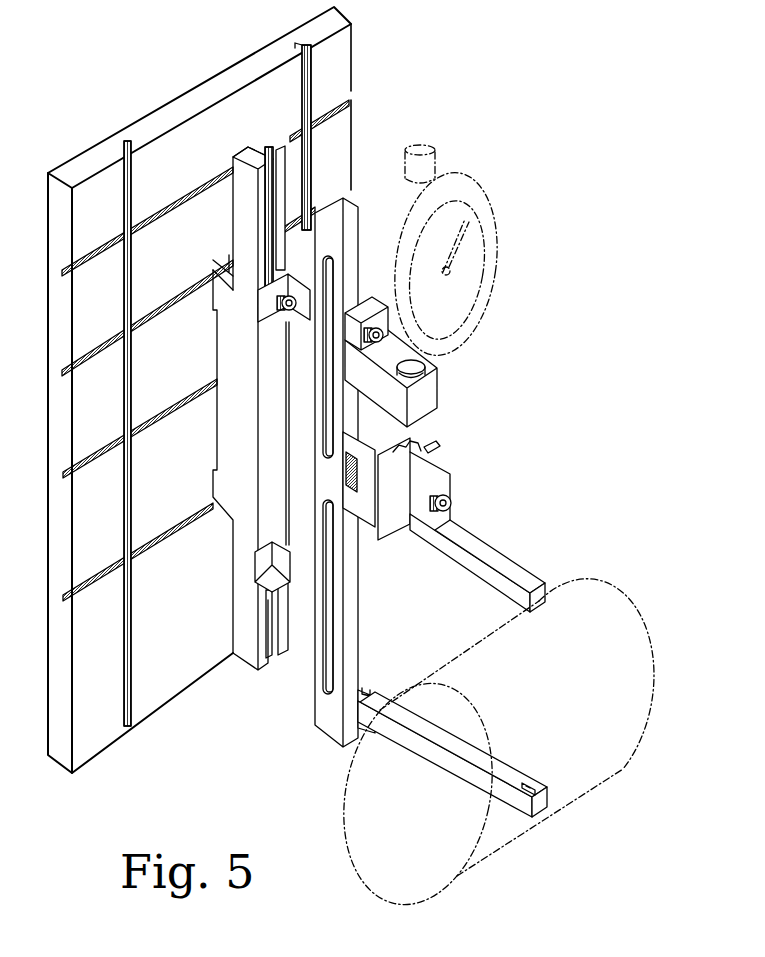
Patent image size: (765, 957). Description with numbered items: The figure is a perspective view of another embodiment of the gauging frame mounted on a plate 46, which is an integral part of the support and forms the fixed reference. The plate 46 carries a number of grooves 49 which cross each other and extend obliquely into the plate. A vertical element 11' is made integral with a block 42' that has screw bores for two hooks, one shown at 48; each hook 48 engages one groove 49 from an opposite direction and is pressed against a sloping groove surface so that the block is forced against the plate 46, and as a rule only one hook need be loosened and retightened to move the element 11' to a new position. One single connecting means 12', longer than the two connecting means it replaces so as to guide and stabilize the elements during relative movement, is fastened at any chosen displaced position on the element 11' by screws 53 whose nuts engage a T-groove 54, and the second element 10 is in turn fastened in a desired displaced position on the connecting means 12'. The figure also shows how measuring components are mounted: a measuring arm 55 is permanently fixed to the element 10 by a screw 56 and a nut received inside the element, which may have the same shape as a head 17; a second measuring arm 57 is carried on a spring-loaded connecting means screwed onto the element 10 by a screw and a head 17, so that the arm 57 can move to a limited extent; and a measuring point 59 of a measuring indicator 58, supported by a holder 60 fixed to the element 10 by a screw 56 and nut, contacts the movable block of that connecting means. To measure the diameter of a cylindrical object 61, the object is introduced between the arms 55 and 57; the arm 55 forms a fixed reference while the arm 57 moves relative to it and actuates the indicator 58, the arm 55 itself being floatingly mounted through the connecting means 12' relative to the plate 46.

The element 10 is at (380, 565).
The element 11' is at (240, 408).
The connecting means 12' is at (292, 402).
The head 17 is at (347, 468).
The block 42' is at (204, 461).
The plate 46 is at (172, 690).
The hook 48 is at (225, 272).
The grooves 49 is at (158, 535).
The screws 53 is at (280, 305).
The T-groove 54 is at (251, 147).
The measuring arm 55 is at (414, 735).
The screw 56 is at (388, 326).
The measuring arm 57 is at (490, 534).
The measuring indicator 58 is at (496, 252).
The measuring point 59 is at (424, 450).
The holder 60 is at (440, 387).
The cylindrical object 61 is at (570, 572).